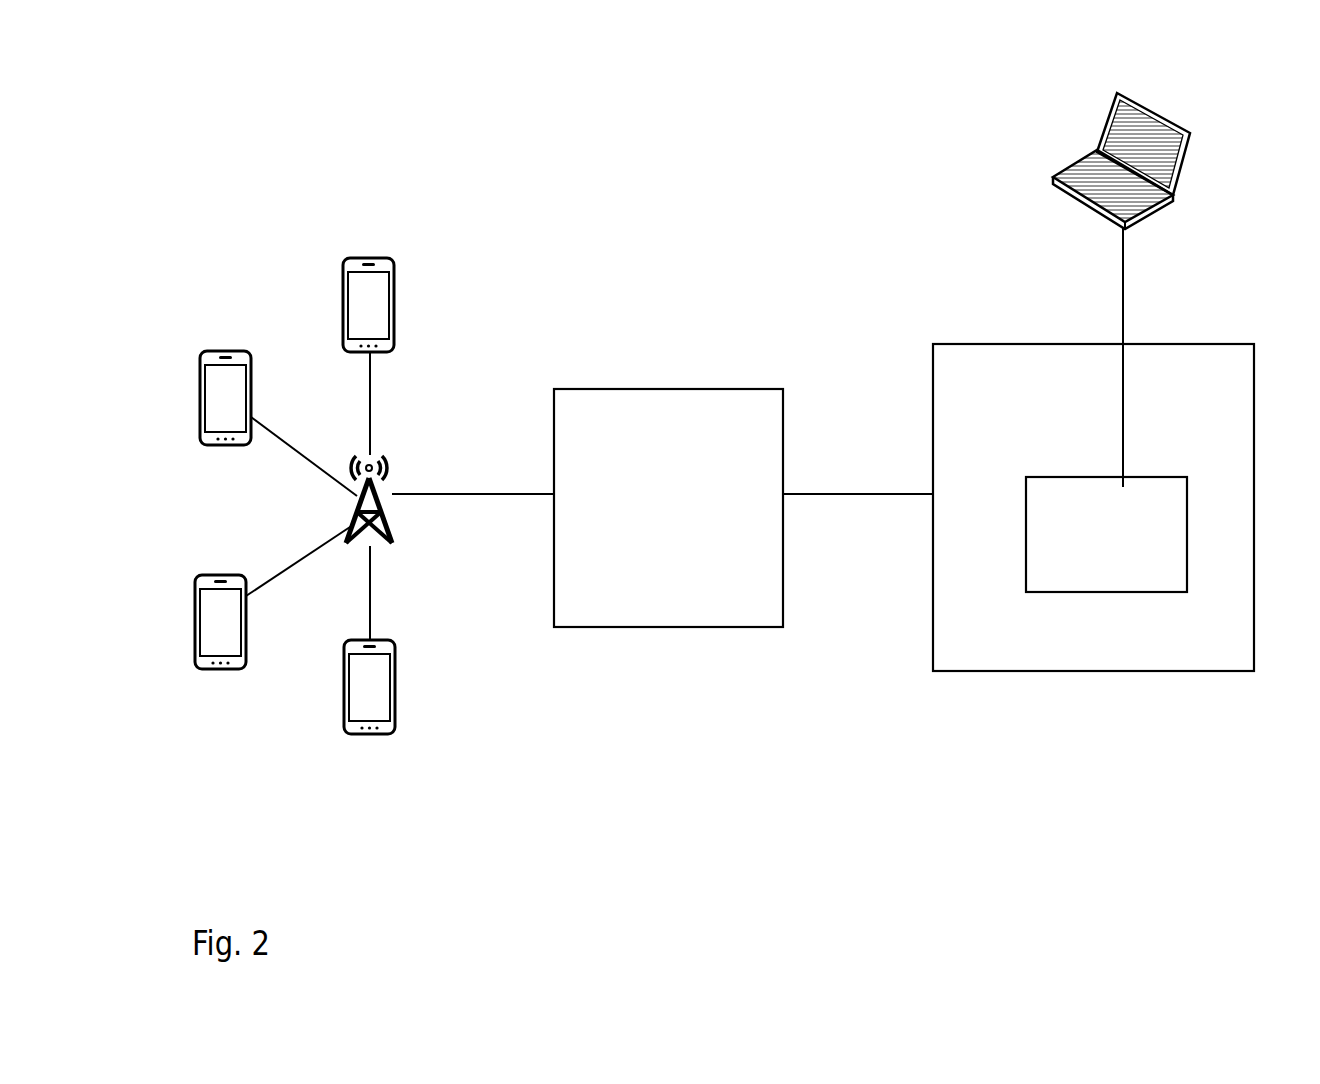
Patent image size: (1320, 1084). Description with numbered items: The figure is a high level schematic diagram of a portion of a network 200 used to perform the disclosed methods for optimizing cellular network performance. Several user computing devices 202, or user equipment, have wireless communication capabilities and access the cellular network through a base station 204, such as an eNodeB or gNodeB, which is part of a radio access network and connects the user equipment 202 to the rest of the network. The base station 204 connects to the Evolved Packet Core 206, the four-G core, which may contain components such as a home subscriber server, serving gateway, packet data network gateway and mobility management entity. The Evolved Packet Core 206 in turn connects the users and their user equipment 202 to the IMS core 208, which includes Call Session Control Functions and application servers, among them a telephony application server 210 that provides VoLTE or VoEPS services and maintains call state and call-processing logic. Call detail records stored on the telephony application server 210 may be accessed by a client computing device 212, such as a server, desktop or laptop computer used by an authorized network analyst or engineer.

The network 200 is at (240, 130).
The user computing devices 202 is at (253, 366).
The base stations 204 is at (387, 512).
The Evolved Packet Core 206 is at (620, 628).
The IMS core 208 is at (1074, 673).
The telephony application server 210 is at (1091, 594).
The client computing device 212 is at (1083, 204).